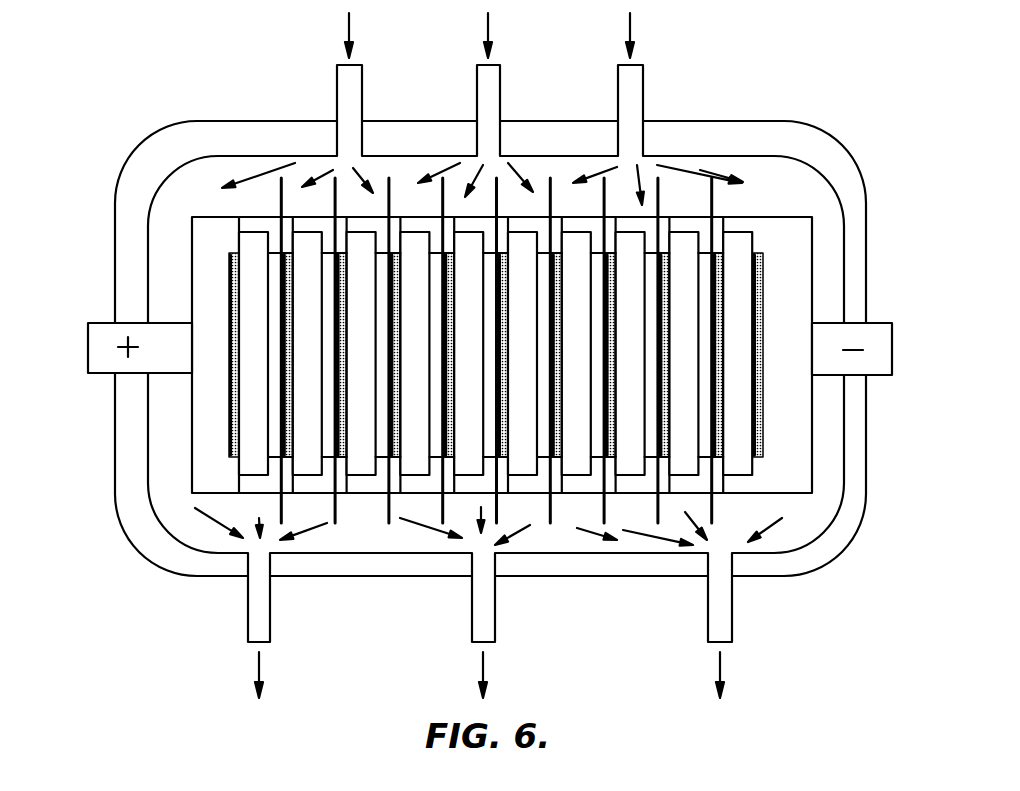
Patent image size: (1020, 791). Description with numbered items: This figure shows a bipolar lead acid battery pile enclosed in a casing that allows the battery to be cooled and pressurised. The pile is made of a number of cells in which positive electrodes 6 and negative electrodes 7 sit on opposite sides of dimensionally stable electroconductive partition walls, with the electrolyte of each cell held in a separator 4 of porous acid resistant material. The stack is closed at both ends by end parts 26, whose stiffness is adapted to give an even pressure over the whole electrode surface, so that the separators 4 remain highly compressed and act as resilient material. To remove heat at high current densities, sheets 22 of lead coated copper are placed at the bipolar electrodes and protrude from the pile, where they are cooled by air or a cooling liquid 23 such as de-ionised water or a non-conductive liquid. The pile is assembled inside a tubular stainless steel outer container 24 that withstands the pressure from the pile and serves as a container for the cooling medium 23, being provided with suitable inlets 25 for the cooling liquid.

The separator 4 is at (253, 377).
The positive electrode 6 is at (228, 443).
The negative electrode 7 is at (265, 395).
The metal sheet 22 is at (273, 500).
The cooling liquid 23 is at (350, 27).
The outer container 24 is at (815, 160).
The inlets 25 is at (632, 97).
The end parts 26 is at (205, 248).